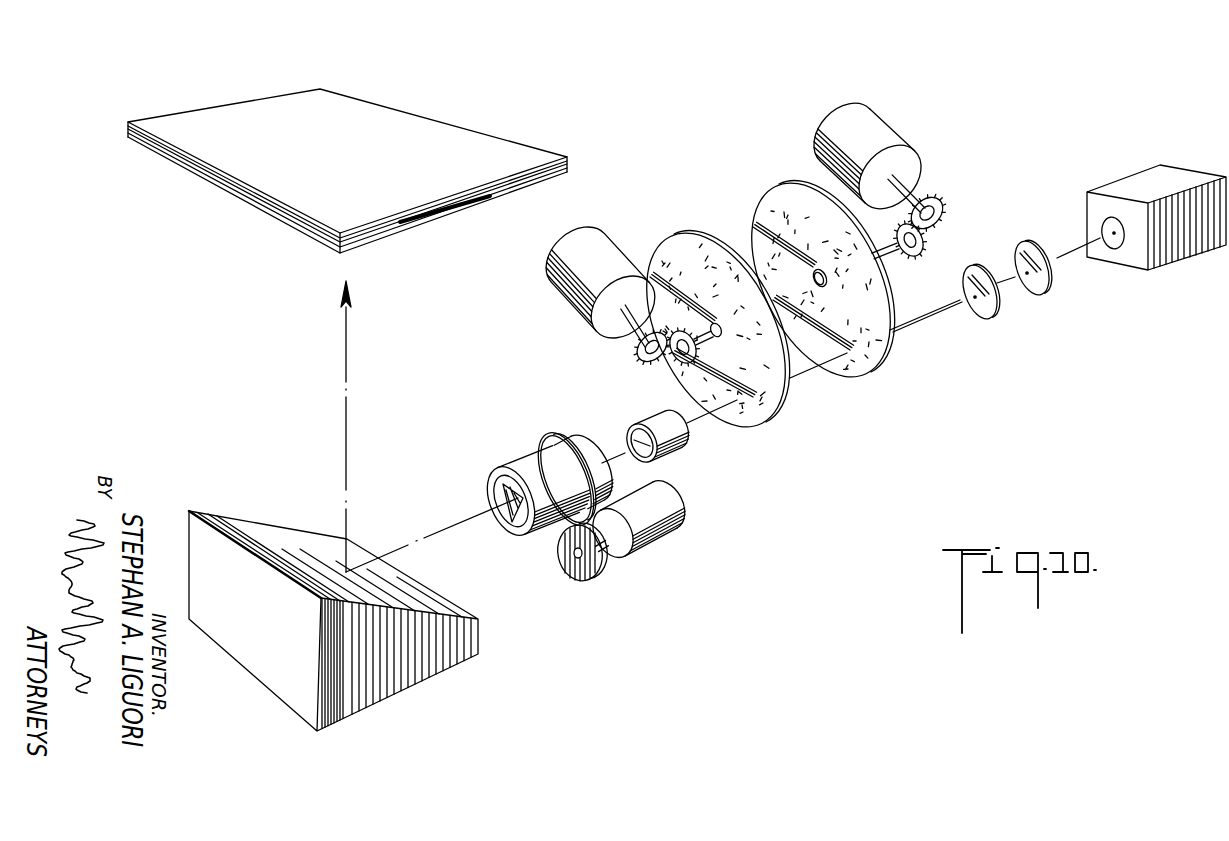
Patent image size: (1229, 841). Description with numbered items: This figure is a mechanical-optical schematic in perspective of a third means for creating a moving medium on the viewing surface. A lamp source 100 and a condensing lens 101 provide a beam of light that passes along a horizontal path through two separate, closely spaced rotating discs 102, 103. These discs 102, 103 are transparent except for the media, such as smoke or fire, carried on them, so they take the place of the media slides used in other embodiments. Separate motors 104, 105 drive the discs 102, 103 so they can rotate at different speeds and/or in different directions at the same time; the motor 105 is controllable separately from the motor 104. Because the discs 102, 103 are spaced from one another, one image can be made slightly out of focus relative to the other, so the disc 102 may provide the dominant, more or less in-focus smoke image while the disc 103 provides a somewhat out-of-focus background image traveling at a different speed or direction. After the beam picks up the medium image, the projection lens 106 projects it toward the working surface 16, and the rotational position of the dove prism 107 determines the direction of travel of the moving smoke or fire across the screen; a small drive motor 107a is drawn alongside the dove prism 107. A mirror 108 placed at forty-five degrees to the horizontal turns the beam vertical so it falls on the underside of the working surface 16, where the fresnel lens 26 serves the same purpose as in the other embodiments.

The working surface 16 is at (347, 152).
The fresnel lens 26 is at (445, 212).
The lamp source 100 is at (1148, 172).
The condensing lens 101 is at (1046, 298).
The rotating disc 102 is at (783, 184).
The rotating disc 103 is at (673, 233).
The motor 104 is at (868, 128).
The motor 105 is at (600, 243).
The projection lens 106 is at (688, 450).
The dove prism 107 is at (518, 475).
The motor 107a is at (637, 547).
The mirror 108 is at (428, 595).